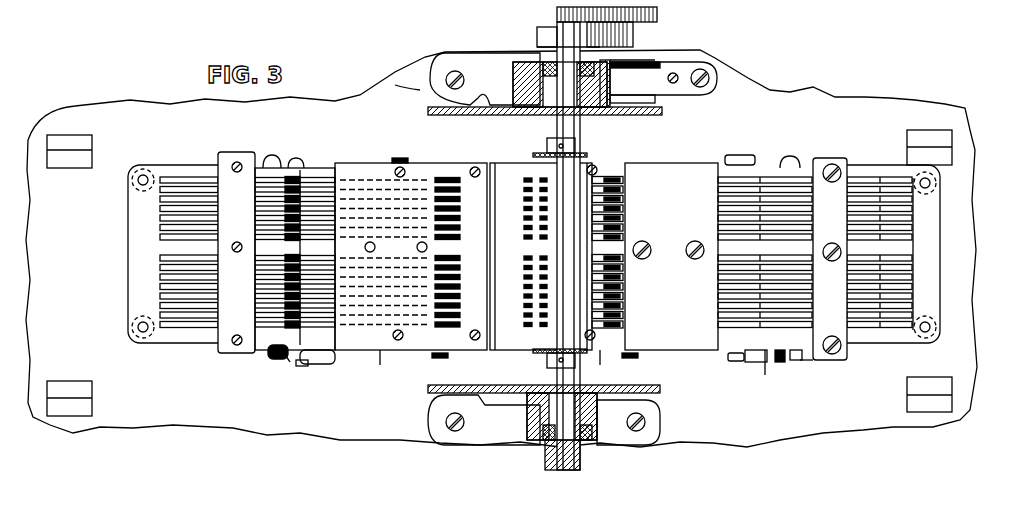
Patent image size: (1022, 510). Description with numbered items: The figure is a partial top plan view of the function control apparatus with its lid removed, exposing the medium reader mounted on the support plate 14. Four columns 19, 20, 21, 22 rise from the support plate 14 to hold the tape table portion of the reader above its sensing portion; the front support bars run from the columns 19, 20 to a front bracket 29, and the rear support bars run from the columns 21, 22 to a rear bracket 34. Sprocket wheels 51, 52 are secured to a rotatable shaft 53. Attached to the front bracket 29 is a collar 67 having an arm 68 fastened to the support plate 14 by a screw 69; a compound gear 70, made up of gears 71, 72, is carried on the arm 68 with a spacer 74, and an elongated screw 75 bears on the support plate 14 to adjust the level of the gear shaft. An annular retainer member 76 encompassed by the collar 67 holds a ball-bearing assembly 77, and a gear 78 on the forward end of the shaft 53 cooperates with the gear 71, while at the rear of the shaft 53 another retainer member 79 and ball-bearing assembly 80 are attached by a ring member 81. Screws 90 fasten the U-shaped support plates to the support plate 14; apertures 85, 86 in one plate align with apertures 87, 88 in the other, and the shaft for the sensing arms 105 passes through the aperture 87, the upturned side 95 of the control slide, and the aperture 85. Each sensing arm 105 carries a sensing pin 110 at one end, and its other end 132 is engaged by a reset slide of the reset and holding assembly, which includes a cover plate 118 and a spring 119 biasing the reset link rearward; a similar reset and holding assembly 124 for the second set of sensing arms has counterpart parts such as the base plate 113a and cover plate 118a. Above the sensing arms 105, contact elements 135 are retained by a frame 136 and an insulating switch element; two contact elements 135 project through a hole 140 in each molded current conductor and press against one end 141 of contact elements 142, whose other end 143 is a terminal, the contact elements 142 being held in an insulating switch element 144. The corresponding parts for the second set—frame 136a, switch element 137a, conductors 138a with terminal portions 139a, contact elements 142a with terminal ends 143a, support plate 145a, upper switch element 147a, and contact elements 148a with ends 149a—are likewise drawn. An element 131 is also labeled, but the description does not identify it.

The support plate 14 is at (106, 120).
The column 19 is at (66, 135).
The column 20 is at (907, 145).
The column 21 is at (92, 389).
The column 22 is at (952, 390).
The front bracket 29 is at (430, 93).
The rear bracket 34 is at (428, 420).
The sprocket wheel 51 is at (547, 356).
The sprocket wheel 52 is at (547, 144).
The rotatable shaft 53 is at (580, 123).
The collar 67 is at (508, 105).
The arm 68 is at (700, 60).
The screw 69 is at (710, 78).
The compound gear 70 is at (697, 40).
The gear 71 is at (657, 12).
The gear 72 is at (633, 28).
The spacer 74 is at (618, 62).
The elongated screw 75 is at (676, 85).
The annular retainer member 76 is at (532, 112).
The ball-bearing assembly 77 is at (533, 58).
The gear 78 is at (537, 30).
The retainer member 79 is at (527, 420).
The ball-bearing assembly 80 is at (597, 437).
The ring member 81 is at (580, 455).
The aperture 85 is at (426, 358).
The aperture 86 is at (636, 353).
The aperture 87 is at (424, 162).
The aperture 88 is at (638, 164).
The screw 90 is at (380, 4).
The upturned side 95 is at (435, 4).
The sensing arm 105 is at (366, 170).
The sensing pin 110 is at (497, 4).
The base plate 113a is at (727, 25).
The cover plate 118 is at (318, 378).
The cover plate 118a is at (750, 165).
The spring 119 is at (275, 360).
The reset and holding assembly 124 is at (940, 0).
The pin 131 is at (348, 12).
The end of sensing arm 132 is at (352, 0).
The contact element 135 is at (316, 172).
The housing 136 is at (386, 355).
The housing 136a is at (720, 168).
The switch element 137a is at (666, 164).
The current conductor 138a is at (598, 352).
The terminal portion 139a is at (752, 362).
The hole 140 is at (440, 244).
The end of contact element 141 is at (298, 168).
The contact element 142 is at (202, 168).
The contact element 142a is at (916, 333).
The terminal end 143 is at (165, 172).
The terminal end 143a is at (905, 295).
The switch element 144 is at (220, 352).
The support plate 145a is at (935, 210).
The switch element 147a is at (845, 352).
The contact element 148a is at (804, 360).
The end of contact element 149a is at (765, 365).